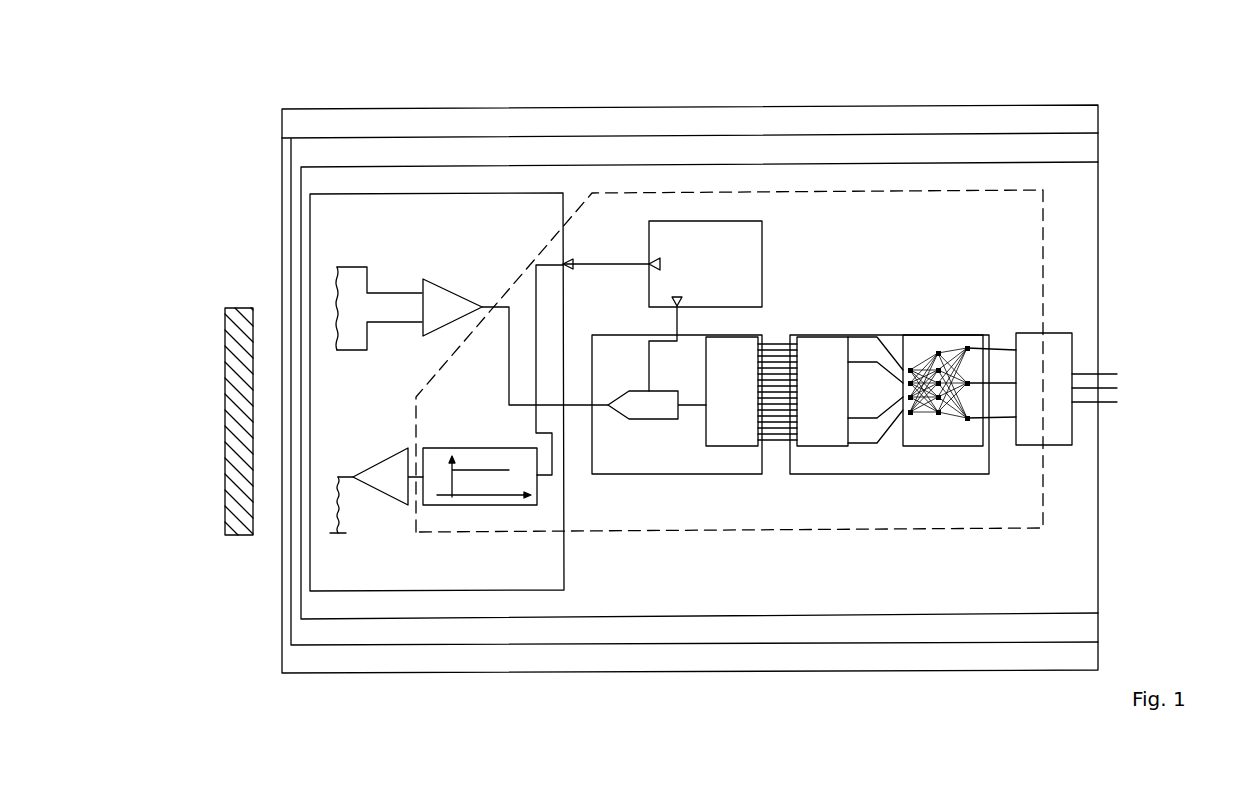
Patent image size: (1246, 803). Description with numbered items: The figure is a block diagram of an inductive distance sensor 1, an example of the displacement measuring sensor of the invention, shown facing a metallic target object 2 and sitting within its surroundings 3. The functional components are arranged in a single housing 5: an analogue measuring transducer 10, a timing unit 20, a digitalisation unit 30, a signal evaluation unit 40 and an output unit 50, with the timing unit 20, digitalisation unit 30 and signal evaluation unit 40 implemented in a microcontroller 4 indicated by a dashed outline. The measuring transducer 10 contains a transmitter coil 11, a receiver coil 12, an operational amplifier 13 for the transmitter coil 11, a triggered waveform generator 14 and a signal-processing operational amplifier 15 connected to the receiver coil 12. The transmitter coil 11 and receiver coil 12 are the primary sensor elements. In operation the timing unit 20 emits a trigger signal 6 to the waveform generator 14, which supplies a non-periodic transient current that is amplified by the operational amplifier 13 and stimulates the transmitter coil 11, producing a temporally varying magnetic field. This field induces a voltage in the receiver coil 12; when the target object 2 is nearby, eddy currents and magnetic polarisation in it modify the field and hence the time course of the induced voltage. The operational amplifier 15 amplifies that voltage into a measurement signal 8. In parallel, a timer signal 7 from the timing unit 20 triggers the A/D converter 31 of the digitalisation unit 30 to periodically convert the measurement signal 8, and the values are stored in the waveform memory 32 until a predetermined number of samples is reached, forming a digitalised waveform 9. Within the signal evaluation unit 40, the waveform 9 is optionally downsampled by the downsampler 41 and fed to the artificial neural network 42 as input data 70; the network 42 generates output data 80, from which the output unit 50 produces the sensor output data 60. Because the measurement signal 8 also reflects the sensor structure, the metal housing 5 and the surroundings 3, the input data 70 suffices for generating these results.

The inductive distance sensor 1 is at (470, 178).
The target object 2 is at (238, 305).
The surroundings 3 is at (360, 123).
The microcontroller 4 is at (1043, 242).
The housing 5 is at (417, 152).
The trigger signal 6 is at (607, 258).
The timer for A/D converter 7 is at (676, 320).
The measurement signal 8 is at (576, 410).
The digitalised waveform 9 is at (778, 336).
The measuring transducer 10 is at (524, 203).
The transmitter coil 11 is at (349, 505).
The receiver coil 12 is at (379, 308).
The operational amplifier 13 is at (388, 458).
The waveform generator 14 is at (488, 455).
The signal-processing operational amplifier 15 is at (455, 293).
The timing unit 20 is at (763, 263).
The digitalisation unit 30 is at (688, 466).
The A/D converter 31 is at (648, 406).
The waveform memory 32 is at (733, 436).
The signal evaluation unit 40 is at (820, 467).
The downsampler 41 is at (830, 338).
The artificial neural network 42 is at (943, 340).
The output unit 50 is at (1027, 338).
The sensor output data 60 is at (1108, 408).
The input data 70 is at (886, 444).
The output data 80 is at (1000, 423).